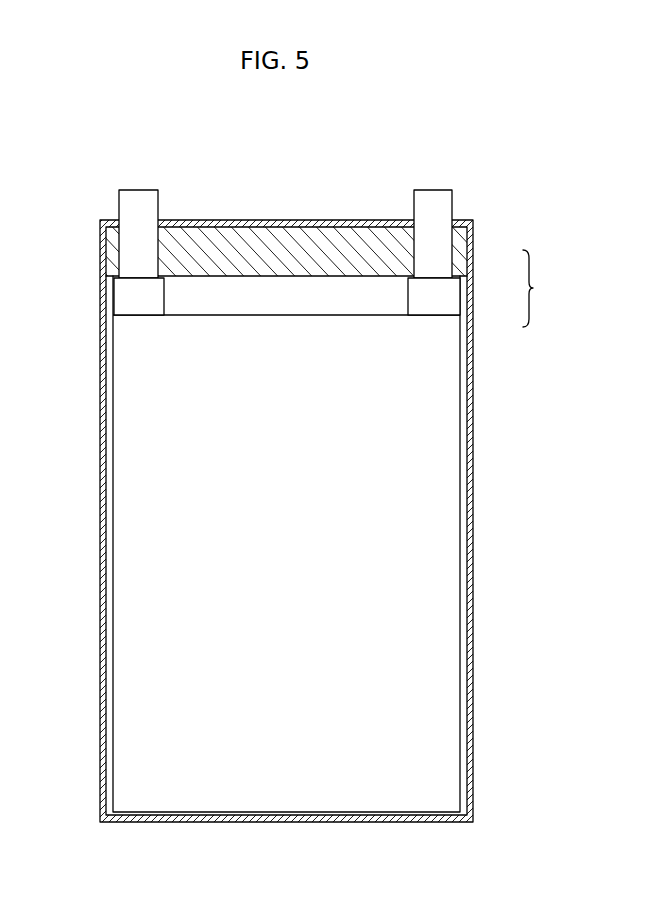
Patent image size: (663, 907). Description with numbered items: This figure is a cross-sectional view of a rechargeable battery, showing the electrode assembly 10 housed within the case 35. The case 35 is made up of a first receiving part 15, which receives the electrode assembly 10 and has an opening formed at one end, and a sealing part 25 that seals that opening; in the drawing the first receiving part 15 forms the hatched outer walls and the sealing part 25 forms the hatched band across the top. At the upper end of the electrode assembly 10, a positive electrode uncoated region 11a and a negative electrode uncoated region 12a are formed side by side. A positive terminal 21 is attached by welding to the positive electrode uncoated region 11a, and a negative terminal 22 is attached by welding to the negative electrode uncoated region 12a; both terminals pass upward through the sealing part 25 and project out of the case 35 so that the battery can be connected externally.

The electrode assembly 10 is at (430, 500).
The positive electrode uncoated region 11a is at (120, 297).
The negative electrode uncoated region 12a is at (411, 296).
The first receiving part 15 is at (470, 320).
The positive terminal 21 is at (138, 193).
The negative terminal 22 is at (433, 193).
The sealing part 25 is at (460, 252).
The case 35 is at (538, 288).